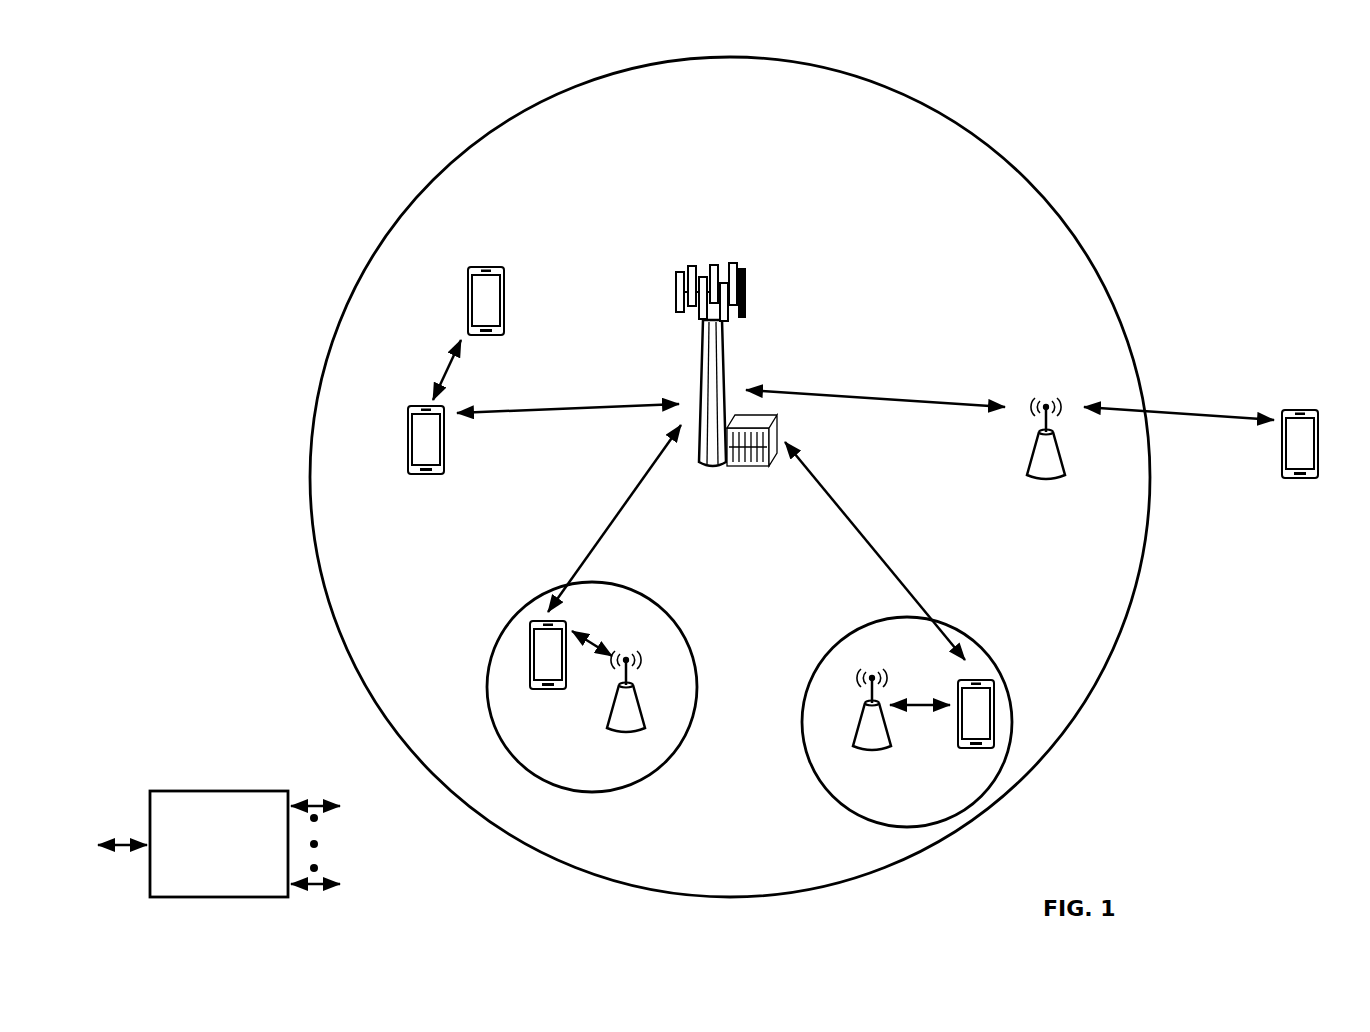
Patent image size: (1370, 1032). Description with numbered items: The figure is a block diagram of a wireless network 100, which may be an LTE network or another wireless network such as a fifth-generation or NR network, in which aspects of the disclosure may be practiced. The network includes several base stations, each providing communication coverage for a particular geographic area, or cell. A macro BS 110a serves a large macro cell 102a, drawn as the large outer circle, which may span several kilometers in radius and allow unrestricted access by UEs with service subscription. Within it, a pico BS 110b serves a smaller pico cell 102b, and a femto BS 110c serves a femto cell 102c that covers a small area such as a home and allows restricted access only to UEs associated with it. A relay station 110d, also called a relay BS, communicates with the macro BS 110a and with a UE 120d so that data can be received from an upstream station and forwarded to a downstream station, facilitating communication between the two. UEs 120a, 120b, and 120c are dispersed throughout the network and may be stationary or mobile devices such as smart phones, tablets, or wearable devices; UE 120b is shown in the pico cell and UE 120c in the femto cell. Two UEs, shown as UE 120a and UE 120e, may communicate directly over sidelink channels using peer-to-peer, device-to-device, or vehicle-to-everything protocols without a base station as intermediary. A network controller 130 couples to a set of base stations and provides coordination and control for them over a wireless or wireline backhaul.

The wireless network 100 is at (200, 52).
The macro cell 102a is at (1010, 164).
The pico cell 102b is at (684, 620).
The femto cell 102c is at (840, 628).
The macro BS 110a is at (727, 258).
The pico BS 110b is at (646, 718).
The femto BS 110c is at (856, 738).
The relay station 110d is at (1046, 396).
The UE 120a is at (408, 432).
The UE 120b is at (538, 690).
The UE 120c is at (964, 750).
The UE 120d is at (1313, 408).
The UE 120e is at (468, 292).
The network controller 130 is at (216, 790).